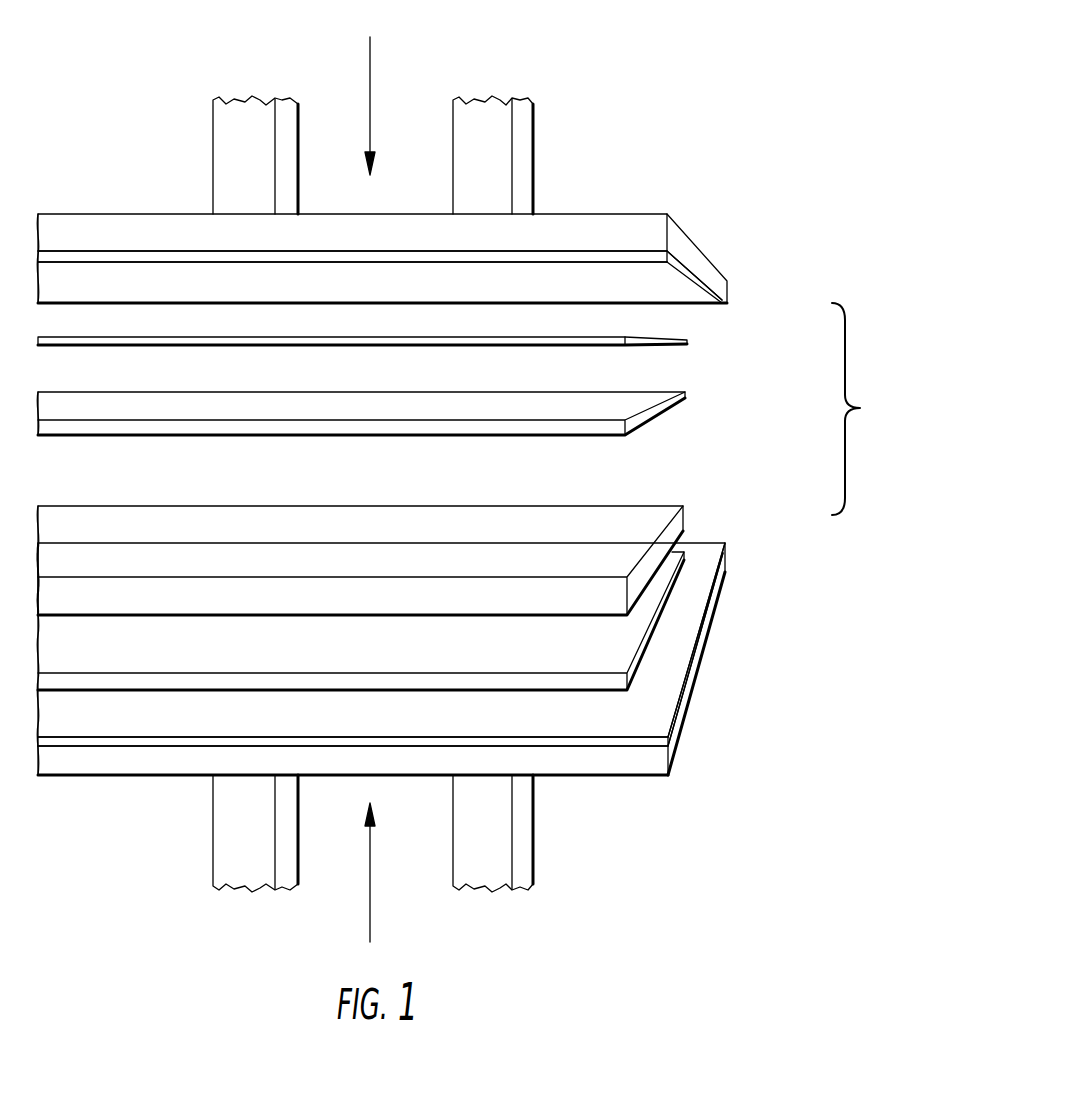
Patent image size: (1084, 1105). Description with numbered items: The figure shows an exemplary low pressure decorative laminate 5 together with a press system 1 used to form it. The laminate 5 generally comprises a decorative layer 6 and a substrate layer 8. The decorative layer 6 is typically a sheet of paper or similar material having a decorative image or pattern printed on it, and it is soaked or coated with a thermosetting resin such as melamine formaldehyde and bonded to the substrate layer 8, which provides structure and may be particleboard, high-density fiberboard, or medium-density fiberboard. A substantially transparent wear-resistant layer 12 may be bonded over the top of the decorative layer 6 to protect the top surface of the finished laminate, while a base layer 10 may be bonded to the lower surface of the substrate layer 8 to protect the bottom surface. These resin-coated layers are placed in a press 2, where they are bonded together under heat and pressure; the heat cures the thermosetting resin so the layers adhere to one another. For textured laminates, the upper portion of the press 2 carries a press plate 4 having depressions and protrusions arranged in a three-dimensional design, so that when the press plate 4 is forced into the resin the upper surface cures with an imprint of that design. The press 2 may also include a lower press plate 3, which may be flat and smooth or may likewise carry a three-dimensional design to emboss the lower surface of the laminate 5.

The press system 1 is at (706, 139).
The press 2 is at (595, 225).
The lower press plate 3 is at (680, 630).
The press plate 4 is at (693, 295).
The low pressure decorative laminate 5 is at (860, 409).
The decorative layer 6 is at (655, 400).
The substrate layer 8 is at (653, 518).
The base layer 10 is at (680, 550).
The wear-resistant layer 12 is at (685, 342).